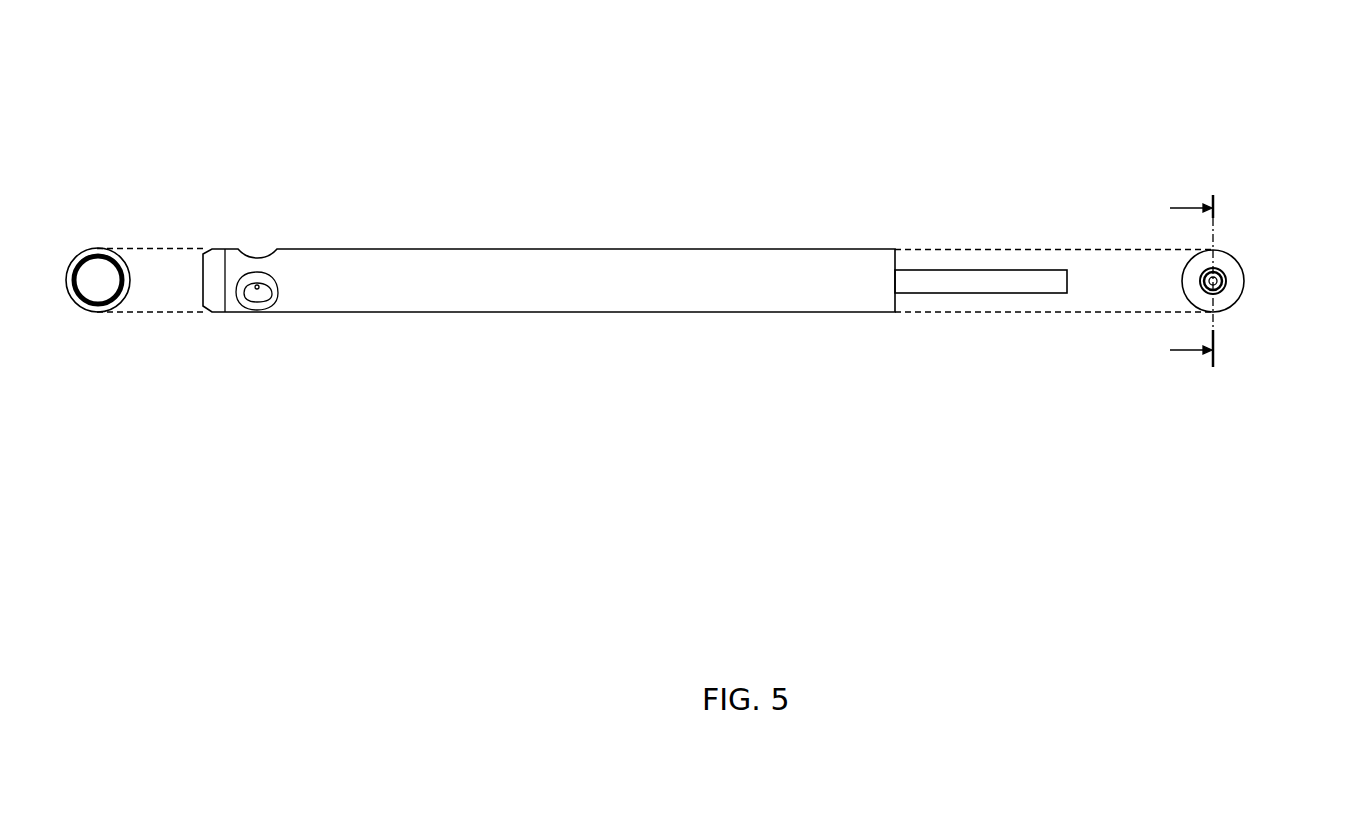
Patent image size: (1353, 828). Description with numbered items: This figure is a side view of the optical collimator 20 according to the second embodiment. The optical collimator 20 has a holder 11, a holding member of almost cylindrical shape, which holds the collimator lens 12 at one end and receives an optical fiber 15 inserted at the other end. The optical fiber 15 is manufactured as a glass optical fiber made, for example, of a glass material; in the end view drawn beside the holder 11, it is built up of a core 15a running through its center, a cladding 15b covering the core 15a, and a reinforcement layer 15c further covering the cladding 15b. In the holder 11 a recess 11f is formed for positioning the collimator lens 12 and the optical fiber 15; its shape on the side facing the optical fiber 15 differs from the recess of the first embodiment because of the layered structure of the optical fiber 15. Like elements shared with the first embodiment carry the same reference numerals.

The optical collimator 20 is at (239, 52).
The holder 11 is at (620, 249).
The recess 11f is at (268, 292).
The collimator lens 12 is at (102, 282).
The optical fiber 15 is at (1123, 259).
The core 15a is at (1217, 282).
The cladding 15b is at (1223, 290).
The reinforcement layer 15c is at (1218, 270).